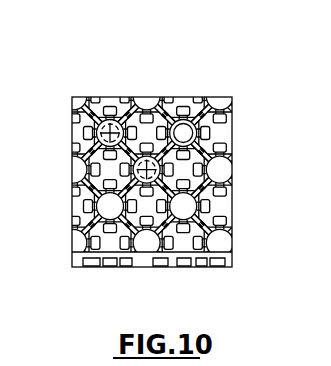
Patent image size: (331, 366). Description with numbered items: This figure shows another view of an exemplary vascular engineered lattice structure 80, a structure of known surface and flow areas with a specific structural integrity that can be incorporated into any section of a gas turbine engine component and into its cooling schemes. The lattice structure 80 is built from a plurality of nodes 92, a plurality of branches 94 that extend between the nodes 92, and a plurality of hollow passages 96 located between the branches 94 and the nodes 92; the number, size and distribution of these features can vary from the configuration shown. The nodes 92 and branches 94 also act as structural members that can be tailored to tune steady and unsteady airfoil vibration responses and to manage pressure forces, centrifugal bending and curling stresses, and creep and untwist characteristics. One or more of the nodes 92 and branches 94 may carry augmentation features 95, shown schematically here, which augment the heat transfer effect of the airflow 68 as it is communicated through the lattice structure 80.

The vascular engineered lattice structure 80 is at (132, 64).
The node 92 is at (102, 110).
The branch 94 is at (112, 99).
The augmentation feature 95 is at (183, 98).
The hollow passage 96 is at (136, 130).
The airflow 68 is at (140, 172).